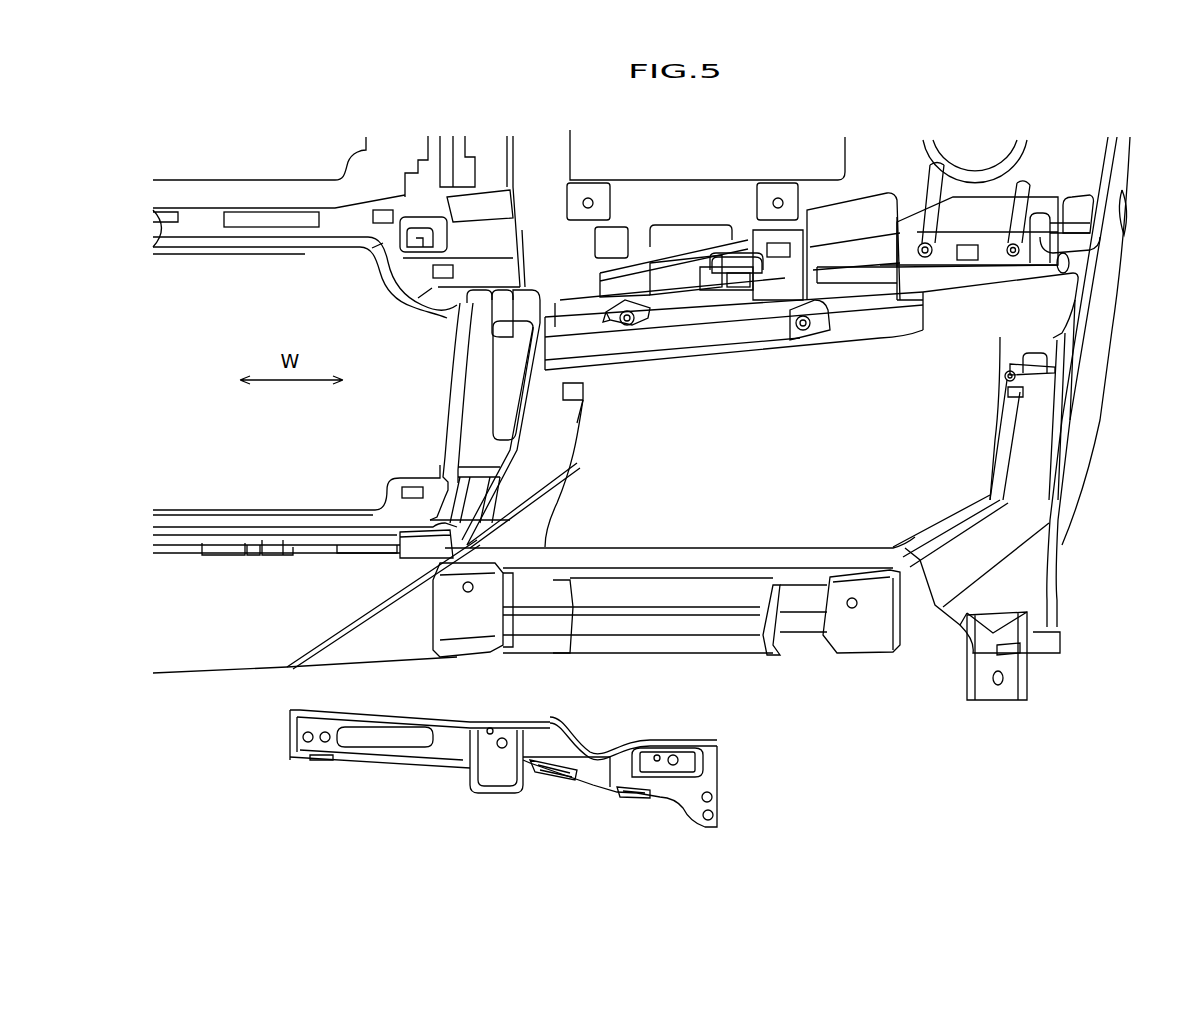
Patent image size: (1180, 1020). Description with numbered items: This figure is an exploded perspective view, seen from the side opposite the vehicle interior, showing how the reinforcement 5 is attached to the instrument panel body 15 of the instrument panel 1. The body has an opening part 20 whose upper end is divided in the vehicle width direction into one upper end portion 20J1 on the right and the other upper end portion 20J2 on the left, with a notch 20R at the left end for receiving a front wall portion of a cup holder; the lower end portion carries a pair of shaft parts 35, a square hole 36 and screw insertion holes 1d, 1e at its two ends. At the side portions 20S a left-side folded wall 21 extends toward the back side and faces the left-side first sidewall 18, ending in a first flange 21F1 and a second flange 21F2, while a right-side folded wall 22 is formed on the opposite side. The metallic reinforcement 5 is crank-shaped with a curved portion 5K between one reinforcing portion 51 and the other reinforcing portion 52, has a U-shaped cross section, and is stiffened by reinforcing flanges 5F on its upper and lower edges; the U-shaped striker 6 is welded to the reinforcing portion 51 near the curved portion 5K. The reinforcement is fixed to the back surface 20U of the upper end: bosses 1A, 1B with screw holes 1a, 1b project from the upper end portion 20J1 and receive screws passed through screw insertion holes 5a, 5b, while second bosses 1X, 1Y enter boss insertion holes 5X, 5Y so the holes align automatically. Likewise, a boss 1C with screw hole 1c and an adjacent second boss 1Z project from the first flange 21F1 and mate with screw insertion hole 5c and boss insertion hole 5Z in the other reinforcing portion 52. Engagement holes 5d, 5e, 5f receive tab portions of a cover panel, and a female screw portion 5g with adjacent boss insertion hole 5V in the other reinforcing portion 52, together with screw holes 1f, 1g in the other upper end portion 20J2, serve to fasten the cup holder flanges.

The instrument panel 1 is at (1064, 353).
The screw hole 1a is at (615, 312).
The screw hole 1b is at (808, 305).
The screw hole 1c is at (1007, 383).
The screw insertion hole 1d is at (463, 593).
The screw insertion hole 1e is at (850, 610).
The screw hole 1f is at (923, 258).
The screw hole 1g is at (1013, 257).
The boss 1A is at (625, 330).
The boss 1B is at (805, 338).
The boss 1C is at (1020, 380).
The second boss 1X is at (617, 320).
The second boss 1Y is at (795, 330).
The second boss 1Z is at (1023, 420).
The reinforcement 5 is at (245, 782).
The screw insertion hole 5a is at (325, 747).
The screw insertion hole 5b is at (490, 737).
The screw insertion hole 5c is at (703, 802).
The engagement hole 5d is at (310, 760).
The engagement hole 5e is at (550, 782).
The engagement hole 5f is at (637, 800).
The female screw portion 5g is at (657, 752).
The reinforcing flange 5F is at (423, 767).
The curved portion 5K is at (593, 736).
The boss insertion hole 5V is at (680, 750).
The boss insertion hole 5X is at (308, 727).
The boss insertion hole 5Y is at (480, 797).
The boss insertion hole 5Z is at (709, 821).
The striker 6 is at (468, 785).
The instrument panel body 15 is at (228, 652).
The left-side first sidewall 18 is at (1098, 389).
The opening part 20 is at (786, 479).
The one upper end portion 20J1 is at (707, 345).
The other upper end portion 20J2 is at (987, 280).
The notch 20R is at (957, 322).
The side portion 20S is at (587, 476).
The back surface 20U is at (873, 330).
The left-side folded wall 21 is at (1007, 515).
The first flange 21F1 is at (997, 500).
The second flange 21F2 is at (993, 473).
The right-side folded wall 22 is at (553, 500).
The shaft part 35 is at (528, 637).
The square hole 36 is at (503, 630).
The one reinforcing portion 51 is at (385, 800).
The other reinforcing portion 52 is at (613, 818).